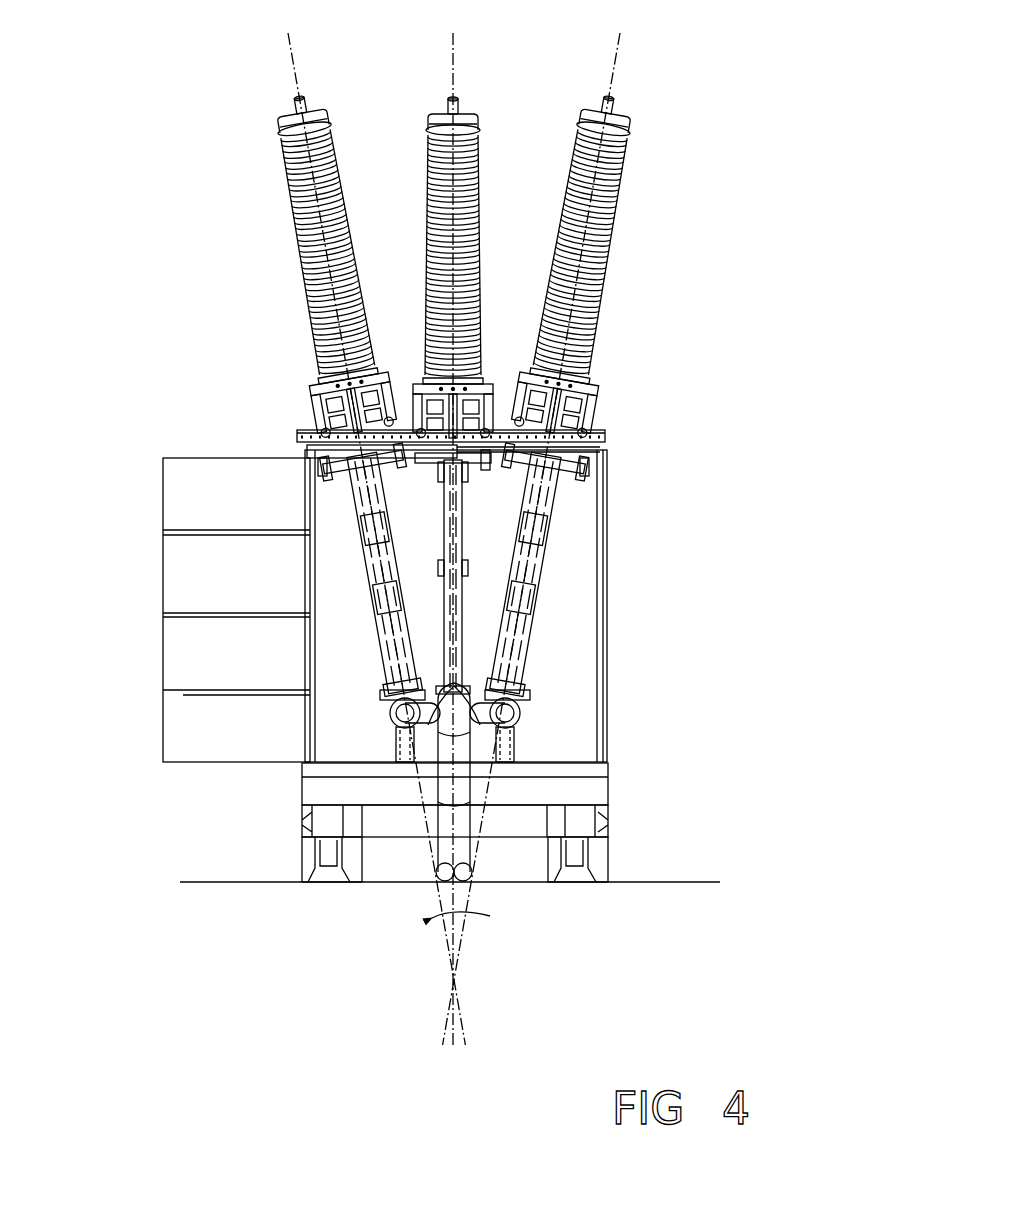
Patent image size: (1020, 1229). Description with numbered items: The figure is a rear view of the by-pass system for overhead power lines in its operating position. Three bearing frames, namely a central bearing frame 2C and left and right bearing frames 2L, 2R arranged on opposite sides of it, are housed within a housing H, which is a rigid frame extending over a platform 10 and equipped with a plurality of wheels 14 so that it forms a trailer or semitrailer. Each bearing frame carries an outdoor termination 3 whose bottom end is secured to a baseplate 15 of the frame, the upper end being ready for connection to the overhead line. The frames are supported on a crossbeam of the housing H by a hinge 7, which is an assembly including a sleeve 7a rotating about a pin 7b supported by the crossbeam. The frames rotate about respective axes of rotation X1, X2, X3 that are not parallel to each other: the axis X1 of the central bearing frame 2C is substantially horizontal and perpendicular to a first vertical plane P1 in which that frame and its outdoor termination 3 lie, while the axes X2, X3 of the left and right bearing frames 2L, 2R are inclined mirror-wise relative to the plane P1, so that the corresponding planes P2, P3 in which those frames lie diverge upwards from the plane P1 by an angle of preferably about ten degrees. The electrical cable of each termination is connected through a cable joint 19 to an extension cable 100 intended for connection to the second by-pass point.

The first substantially vertical plane P1 is at (450, 40).
The second plane P2 is at (290, 48).
The third plane P3 is at (616, 42).
The outdoor termination 3 is at (280, 226).
The baseplate 15 is at (317, 373).
The cable joint 19 is at (470, 381).
The sleeve 7a is at (582, 400).
The hinge 7 is at (300, 437).
The pin 7b is at (600, 466).
The axis of rotation X1 is at (489, 468).
The axis of rotation X2 is at (325, 477).
The axis of rotation X3 is at (584, 478).
The central bearing frame 2C is at (481, 579).
The left bearing frame 2L is at (365, 623).
The right bearing frame 2R is at (540, 622).
The housing H is at (290, 768).
The platform 10 is at (550, 770).
The wheels 14 is at (580, 860).
The cable 100 is at (440, 845).